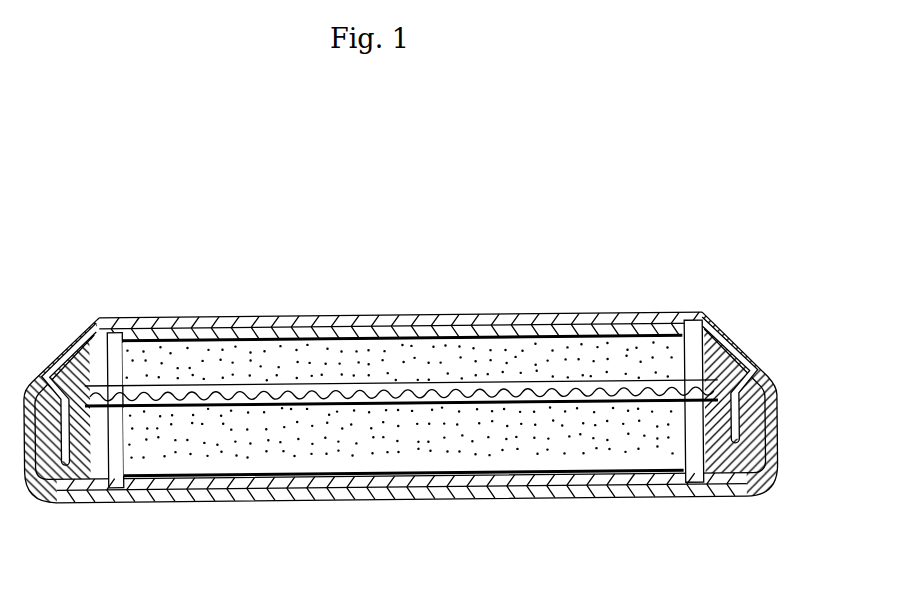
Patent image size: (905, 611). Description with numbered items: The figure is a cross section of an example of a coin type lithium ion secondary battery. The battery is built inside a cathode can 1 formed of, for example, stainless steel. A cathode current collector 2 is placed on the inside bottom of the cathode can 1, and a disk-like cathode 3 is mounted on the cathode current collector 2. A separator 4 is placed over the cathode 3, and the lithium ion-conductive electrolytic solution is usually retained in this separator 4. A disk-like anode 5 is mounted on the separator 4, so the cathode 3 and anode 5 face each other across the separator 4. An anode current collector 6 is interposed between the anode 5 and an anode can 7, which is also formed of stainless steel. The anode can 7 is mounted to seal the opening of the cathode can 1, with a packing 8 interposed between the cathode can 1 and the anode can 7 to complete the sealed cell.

The cathode can 1 is at (612, 500).
The cathode current collector 2 is at (432, 490).
The cathode 3 is at (270, 452).
The separator 4 is at (390, 388).
The anode 5 is at (528, 358).
The anode current collector 6 is at (272, 326).
The anode can 7 is at (192, 314).
The packing 8 is at (748, 407).